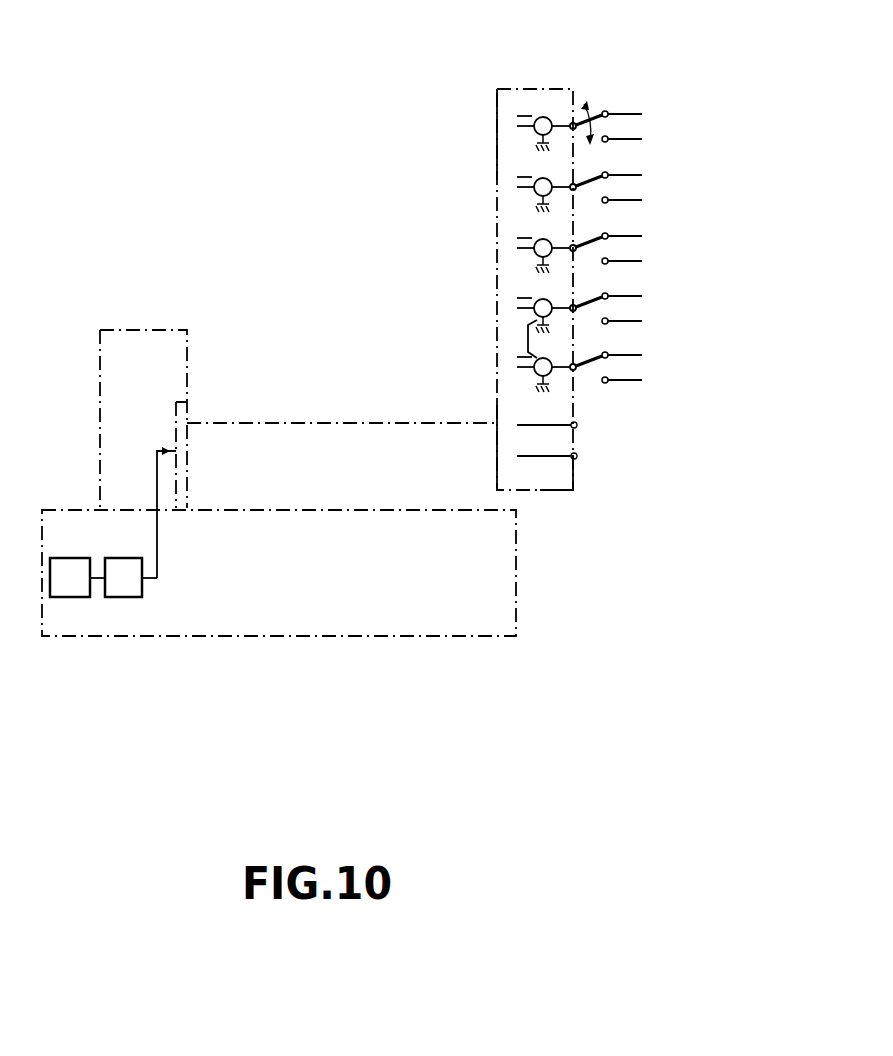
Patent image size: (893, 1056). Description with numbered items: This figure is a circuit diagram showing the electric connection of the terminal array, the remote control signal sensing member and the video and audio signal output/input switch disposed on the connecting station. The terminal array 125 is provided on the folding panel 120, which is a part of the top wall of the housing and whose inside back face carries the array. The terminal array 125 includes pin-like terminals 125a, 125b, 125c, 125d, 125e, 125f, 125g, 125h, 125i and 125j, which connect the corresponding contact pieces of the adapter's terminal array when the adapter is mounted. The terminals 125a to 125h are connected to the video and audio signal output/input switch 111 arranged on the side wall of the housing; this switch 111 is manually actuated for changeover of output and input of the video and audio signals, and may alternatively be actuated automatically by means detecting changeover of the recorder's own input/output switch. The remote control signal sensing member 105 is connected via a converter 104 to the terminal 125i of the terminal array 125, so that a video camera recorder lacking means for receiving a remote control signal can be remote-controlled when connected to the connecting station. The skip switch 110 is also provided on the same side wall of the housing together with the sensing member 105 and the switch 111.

The terminal array 125 is at (549, 108).
The pin-like terminal 125a is at (528, 116).
The pin-like terminal 125b is at (517, 126).
The pin-like terminal 125c is at (525, 177).
The pin-like terminal 125d is at (525, 187).
The pin-like terminal 125e is at (525, 238).
The pin-like terminal 125f is at (525, 248).
The pin-like terminal 125g is at (525, 298).
The pin-like terminal 125h is at (525, 357).
The pin-like terminal 125i is at (525, 425).
The pin-like terminal 125j is at (525, 456).
The video and audio signal output/input switch 111 is at (600, 110).
The folding panel 120 is at (167, 330).
The skip switch 110 is at (275, 637).
The remote control signal sensing member 105 is at (70, 597).
The converter 104 is at (120, 597).